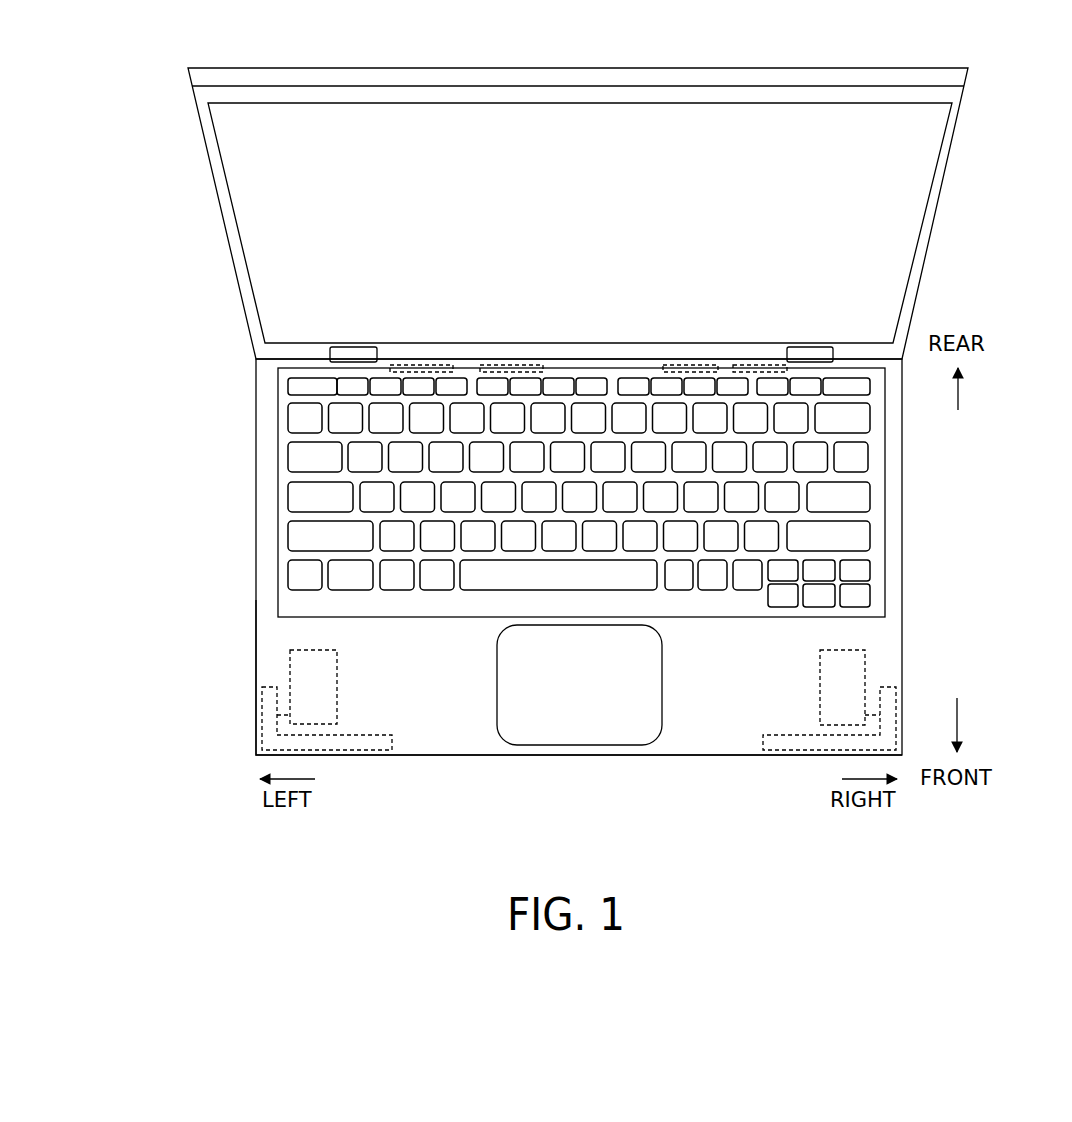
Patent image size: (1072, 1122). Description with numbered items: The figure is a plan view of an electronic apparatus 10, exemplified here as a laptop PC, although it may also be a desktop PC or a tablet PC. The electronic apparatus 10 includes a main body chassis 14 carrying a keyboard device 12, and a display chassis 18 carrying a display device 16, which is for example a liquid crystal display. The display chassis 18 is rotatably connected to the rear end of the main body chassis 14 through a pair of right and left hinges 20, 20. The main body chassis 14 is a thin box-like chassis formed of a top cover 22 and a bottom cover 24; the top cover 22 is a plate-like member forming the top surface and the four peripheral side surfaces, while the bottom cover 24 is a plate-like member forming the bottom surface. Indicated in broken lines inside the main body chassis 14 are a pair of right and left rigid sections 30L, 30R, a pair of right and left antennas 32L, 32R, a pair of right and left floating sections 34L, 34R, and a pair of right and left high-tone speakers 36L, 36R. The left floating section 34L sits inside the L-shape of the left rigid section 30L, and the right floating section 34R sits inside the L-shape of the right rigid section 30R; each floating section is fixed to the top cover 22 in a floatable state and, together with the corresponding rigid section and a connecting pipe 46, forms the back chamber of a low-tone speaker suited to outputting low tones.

The electronic apparatus 10 is at (70, 196).
The keyboard device 12 is at (276, 472).
The main body chassis 14 is at (190, 505).
The display device 16 is at (900, 213).
The display chassis 18 is at (958, 149).
The hinge 20 is at (346, 350).
The top cover 22 is at (268, 519).
The bottom cover 24 is at (256, 576).
The left rigid section 30L is at (372, 752).
The right rigid section 30R is at (790, 752).
The left antenna 32L is at (523, 364).
The right antenna 32R is at (686, 364).
The left floating section 34L is at (290, 662).
The right floating section 34R is at (866, 662).
The left high-tone speaker 36L is at (422, 364).
The right high-tone speaker 36R is at (756, 364).
The connecting pipe 46 is at (284, 700).